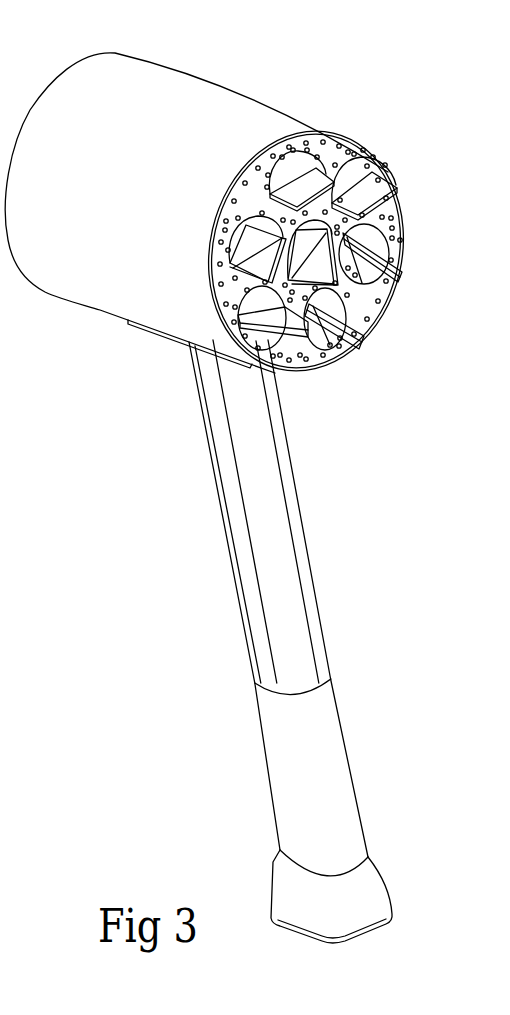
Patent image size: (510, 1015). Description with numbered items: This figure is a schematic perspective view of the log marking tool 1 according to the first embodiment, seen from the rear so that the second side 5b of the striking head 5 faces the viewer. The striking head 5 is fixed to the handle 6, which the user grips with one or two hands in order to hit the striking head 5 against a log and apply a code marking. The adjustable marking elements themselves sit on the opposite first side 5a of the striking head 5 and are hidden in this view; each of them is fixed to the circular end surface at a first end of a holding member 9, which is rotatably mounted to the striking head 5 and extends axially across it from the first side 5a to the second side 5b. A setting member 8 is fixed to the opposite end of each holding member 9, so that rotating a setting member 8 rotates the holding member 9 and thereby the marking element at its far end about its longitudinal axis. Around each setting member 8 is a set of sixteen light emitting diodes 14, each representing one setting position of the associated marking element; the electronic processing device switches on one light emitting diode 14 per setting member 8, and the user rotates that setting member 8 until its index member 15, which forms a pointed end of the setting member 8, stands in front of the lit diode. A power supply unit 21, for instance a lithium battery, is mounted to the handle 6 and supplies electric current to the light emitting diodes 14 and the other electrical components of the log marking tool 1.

The log marking tool 1 is at (107, 435).
The striking head 5 is at (83, 291).
The first side of the striking head 5a is at (64, 69).
The second side of the striking head 5b is at (342, 151).
The handle 6 is at (294, 523).
The setting member 8 is at (250, 265).
The holding member 9 is at (240, 233).
The light emitting diodes 14 is at (230, 232).
The index member 15 is at (265, 226).
The power supply unit 21 is at (290, 890).